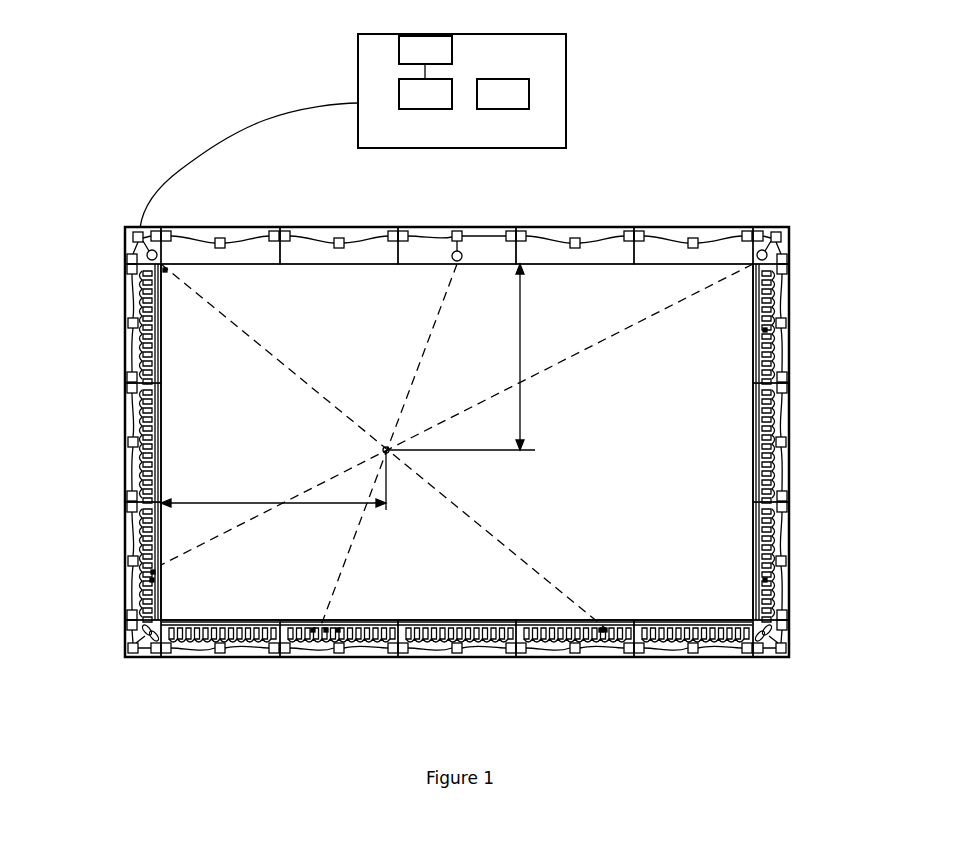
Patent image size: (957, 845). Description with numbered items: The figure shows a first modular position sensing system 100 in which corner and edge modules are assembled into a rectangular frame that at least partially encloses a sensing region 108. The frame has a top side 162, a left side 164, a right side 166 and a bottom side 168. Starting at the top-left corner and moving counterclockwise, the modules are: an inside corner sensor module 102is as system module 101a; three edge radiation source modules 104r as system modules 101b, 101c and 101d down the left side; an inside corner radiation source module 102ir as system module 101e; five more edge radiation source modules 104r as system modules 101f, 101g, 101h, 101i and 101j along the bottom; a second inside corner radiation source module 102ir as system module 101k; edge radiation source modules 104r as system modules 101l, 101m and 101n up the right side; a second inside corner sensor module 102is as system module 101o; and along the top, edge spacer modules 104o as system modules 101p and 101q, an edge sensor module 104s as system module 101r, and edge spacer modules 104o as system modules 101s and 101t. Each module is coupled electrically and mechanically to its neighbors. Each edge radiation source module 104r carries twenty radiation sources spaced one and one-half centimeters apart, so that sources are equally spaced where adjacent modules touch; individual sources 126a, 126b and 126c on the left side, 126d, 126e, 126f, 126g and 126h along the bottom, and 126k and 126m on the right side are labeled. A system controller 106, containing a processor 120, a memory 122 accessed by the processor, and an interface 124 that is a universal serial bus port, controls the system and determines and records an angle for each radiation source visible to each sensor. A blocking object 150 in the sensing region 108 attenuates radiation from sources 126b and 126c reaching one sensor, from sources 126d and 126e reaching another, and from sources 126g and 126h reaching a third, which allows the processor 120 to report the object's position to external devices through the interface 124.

The modular position sensing system 100 is at (168, 122).
The system module 101a is at (128, 234).
The system module 101b is at (126, 293).
The system module 101c is at (126, 405).
The system module 101d is at (126, 520).
The system module 101e is at (126, 633).
The system module 101f is at (240, 658).
The system module 101g is at (320, 658).
The system module 101h is at (473, 658).
The system module 101i is at (608, 658).
The system module 101j is at (740, 658).
The system module 101k is at (792, 628).
The system module 101l is at (792, 530).
The system module 101m is at (792, 474).
The system module 101n is at (792, 356).
The system module 101o is at (792, 252).
The system module 101p is at (693, 238).
The system module 101q is at (592, 238).
The system module 101r is at (432, 232).
The system module 101s is at (347, 236).
The system module 101t is at (244, 232).
The inside corner sensor module 102is is at (126, 247).
The inside corner radiation source module 102ir is at (142, 658).
The edge spacer module 104o is at (262, 228).
The edge radiation source module 104r is at (126, 330).
The edge sensor module 104s is at (485, 230).
The system controller 106 is at (353, 131).
The sensing region 108 is at (457, 442).
The processor 120 is at (425, 94).
The memory 122 is at (503, 94).
The interface 124 is at (425, 57).
The radiation source 126a is at (166, 271).
The radiation source 126b is at (154, 572).
The radiation source 126c is at (153, 580).
The radiation source 126d is at (313, 628).
The radiation source 126e is at (326, 630).
The radiation source 126f is at (338, 630).
The radiation source 126g is at (601, 630).
The radiation source 126h is at (605, 630).
The radiation source 126k is at (765, 580).
The radiation source 126m is at (765, 330).
The blocking object 150 is at (382, 450).
The top side 162 is at (462, 268).
The left side 164 is at (162, 432).
The right side 166 is at (752, 432).
The bottom side 168 is at (452, 628).